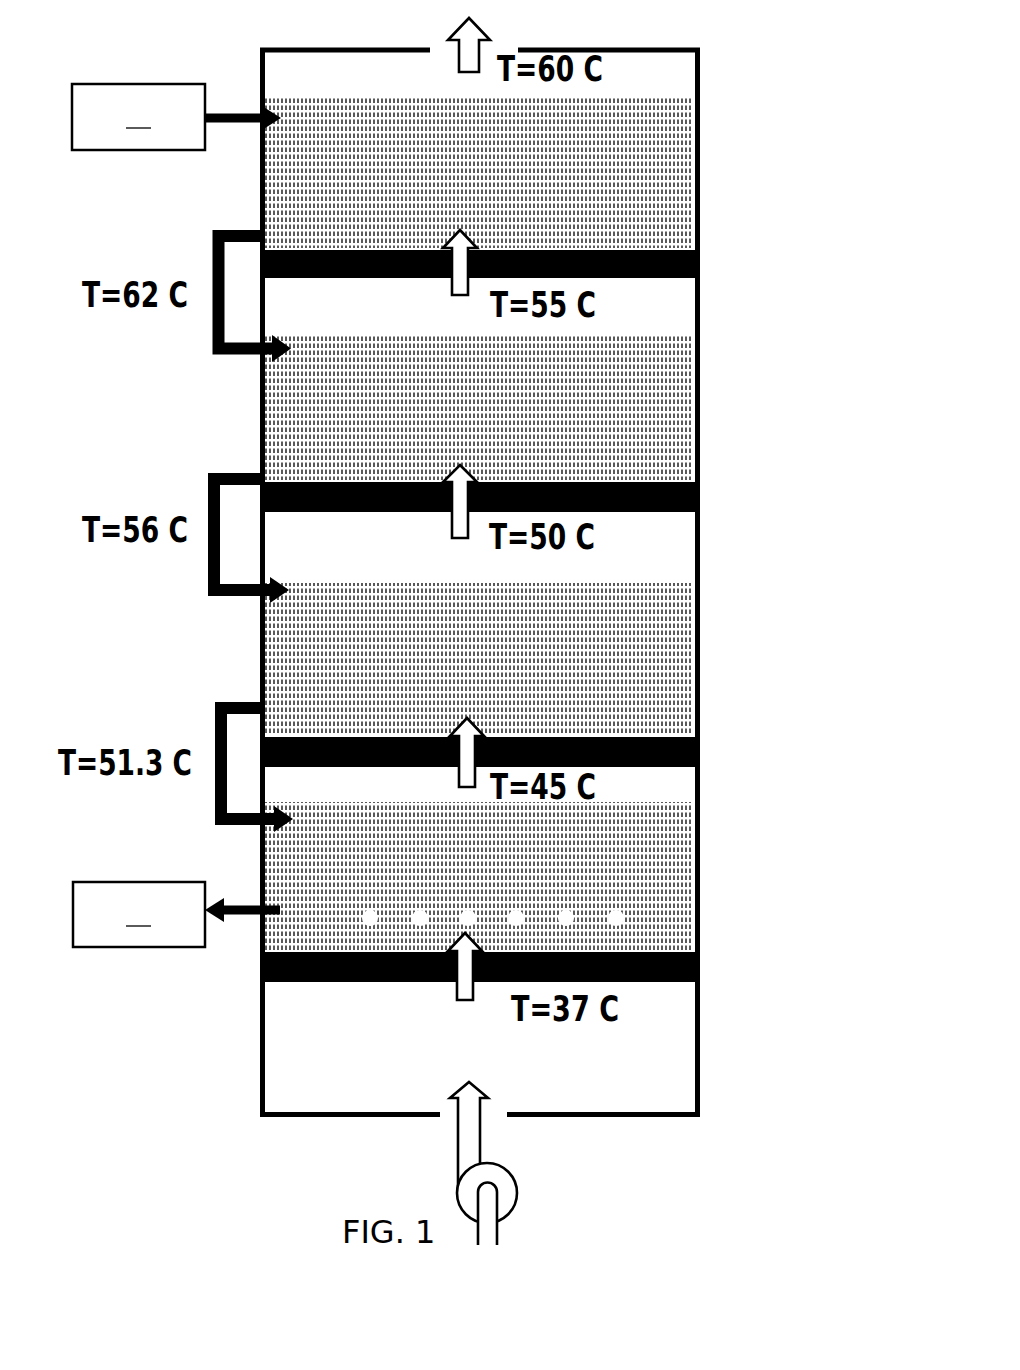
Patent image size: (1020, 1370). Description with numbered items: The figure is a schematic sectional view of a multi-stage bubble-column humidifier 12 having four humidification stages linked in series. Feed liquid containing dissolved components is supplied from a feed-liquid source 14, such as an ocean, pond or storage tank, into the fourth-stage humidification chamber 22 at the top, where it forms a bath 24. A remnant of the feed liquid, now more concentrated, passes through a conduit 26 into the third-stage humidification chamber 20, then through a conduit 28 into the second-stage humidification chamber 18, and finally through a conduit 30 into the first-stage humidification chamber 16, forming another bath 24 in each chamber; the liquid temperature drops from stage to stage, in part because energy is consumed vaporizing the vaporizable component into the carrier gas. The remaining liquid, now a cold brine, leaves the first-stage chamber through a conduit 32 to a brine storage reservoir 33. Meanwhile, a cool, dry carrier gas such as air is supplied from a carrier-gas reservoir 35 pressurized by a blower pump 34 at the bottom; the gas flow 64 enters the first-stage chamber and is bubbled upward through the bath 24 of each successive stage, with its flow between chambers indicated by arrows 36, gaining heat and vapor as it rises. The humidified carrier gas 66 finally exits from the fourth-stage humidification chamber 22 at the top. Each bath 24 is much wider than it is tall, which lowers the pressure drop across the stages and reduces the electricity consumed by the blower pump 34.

The multi-stage bubble-column humidifier 12 is at (199, 52).
The feed-liquid source 14 is at (176, 117).
The first-stage humidification chamber 16 is at (719, 830).
The second-stage humidification chamber 18 is at (719, 605).
The third-stage humidification chamber 20 is at (722, 363).
The fourth-stage humidification chamber 22 is at (722, 118).
The bath 24 is at (483, 182).
The conduit 26 is at (213, 272).
The conduit 28 is at (208, 515).
The conduit 30 is at (215, 735).
The conduit 32 is at (222, 905).
The brine storage reservoir 33 is at (139, 914).
The blower pump 34 is at (466, 1185).
The carrier-gas reservoir 35 is at (478, 1053).
The arrows 36 is at (454, 288).
The inlet air flow 64 is at (469, 1115).
The dehumidified carrier gas 66 is at (466, 32).